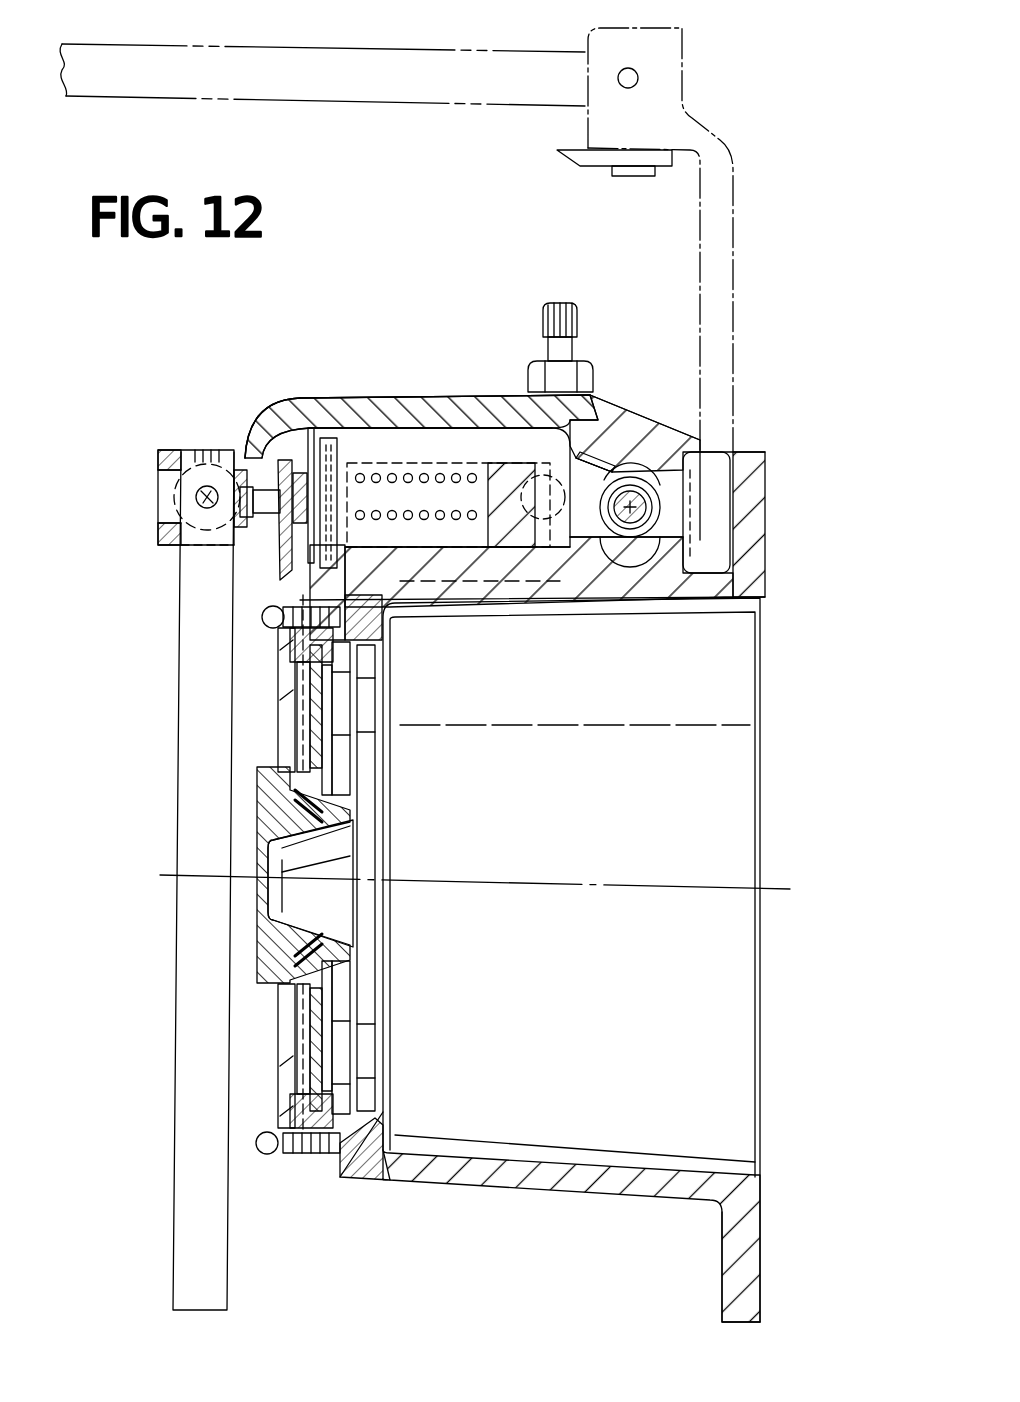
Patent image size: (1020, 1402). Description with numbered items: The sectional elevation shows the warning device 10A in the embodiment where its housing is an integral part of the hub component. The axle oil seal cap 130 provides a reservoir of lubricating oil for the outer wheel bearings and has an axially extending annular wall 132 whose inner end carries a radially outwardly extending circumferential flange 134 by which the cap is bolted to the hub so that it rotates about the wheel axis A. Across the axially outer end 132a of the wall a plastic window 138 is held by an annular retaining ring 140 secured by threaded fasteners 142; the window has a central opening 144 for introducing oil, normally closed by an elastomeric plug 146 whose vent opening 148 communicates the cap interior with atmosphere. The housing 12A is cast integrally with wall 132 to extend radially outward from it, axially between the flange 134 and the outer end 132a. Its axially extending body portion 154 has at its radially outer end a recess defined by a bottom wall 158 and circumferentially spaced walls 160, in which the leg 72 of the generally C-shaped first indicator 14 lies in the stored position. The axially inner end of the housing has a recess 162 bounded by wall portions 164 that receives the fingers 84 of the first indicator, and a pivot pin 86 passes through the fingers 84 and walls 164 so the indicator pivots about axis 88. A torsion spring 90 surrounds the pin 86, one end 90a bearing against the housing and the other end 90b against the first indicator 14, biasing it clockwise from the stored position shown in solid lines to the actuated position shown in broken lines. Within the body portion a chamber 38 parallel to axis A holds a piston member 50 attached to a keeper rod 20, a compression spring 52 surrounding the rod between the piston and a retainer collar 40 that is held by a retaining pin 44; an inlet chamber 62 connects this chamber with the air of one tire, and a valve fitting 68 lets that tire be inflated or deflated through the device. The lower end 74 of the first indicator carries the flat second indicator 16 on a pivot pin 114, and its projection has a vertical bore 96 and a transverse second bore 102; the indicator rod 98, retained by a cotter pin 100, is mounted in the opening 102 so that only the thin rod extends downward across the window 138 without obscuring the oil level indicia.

The indicator rod 98 is at (408, 75).
The first indicator 14 is at (740, 189).
The second indicator 16 is at (592, 169).
The brake assembly 10A is at (210, 445).
The housing 12A is at (409, 388).
The walls 160 is at (425, 395).
The leg 72 is at (437, 413).
The tire inflating-deflating valve fitting 68 is at (587, 338).
The keeper rod 20 is at (455, 457).
The other end of torsion spring 90b is at (608, 473).
The inlet chamber 62 is at (592, 466).
The wall portions 164 is at (715, 452).
The fingers 84 is at (697, 440).
The recess 162 is at (700, 468).
The torsion spring 90 is at (680, 497).
The pivot pin 86 is at (652, 509).
The axis 88 is at (655, 525).
The lower end 74 is at (207, 447).
The pivot pin 114 is at (262, 460).
The cotter pin 100 is at (200, 490).
The vertical bore 96 is at (160, 480).
The second bore 102 is at (183, 527).
The retaining pin 44 is at (290, 457).
The retainer collar 40 is at (343, 420).
The bottom wall 158 is at (380, 437).
The chamber 38 is at (465, 560).
The compression spring 52 is at (533, 540).
The body portion 154 is at (493, 573).
The piston member 50 is at (573, 593).
The one end of torsion spring 90a is at (607, 537).
The opening 144 is at (353, 813).
The vent opening 148 is at (285, 875).
The wheel axis A is at (733, 888).
The removable plug 146 is at (252, 927).
The window 138 is at (307, 1037).
The threaded fasteners 142 is at (263, 1133).
The annular retaining ring 140 is at (265, 1160).
The axially outer end of wall 132a is at (293, 1170).
The annular wall 132 is at (530, 1193).
The axle oil seal cap 130 is at (583, 1203).
The circumferential flange 134 is at (738, 1248).